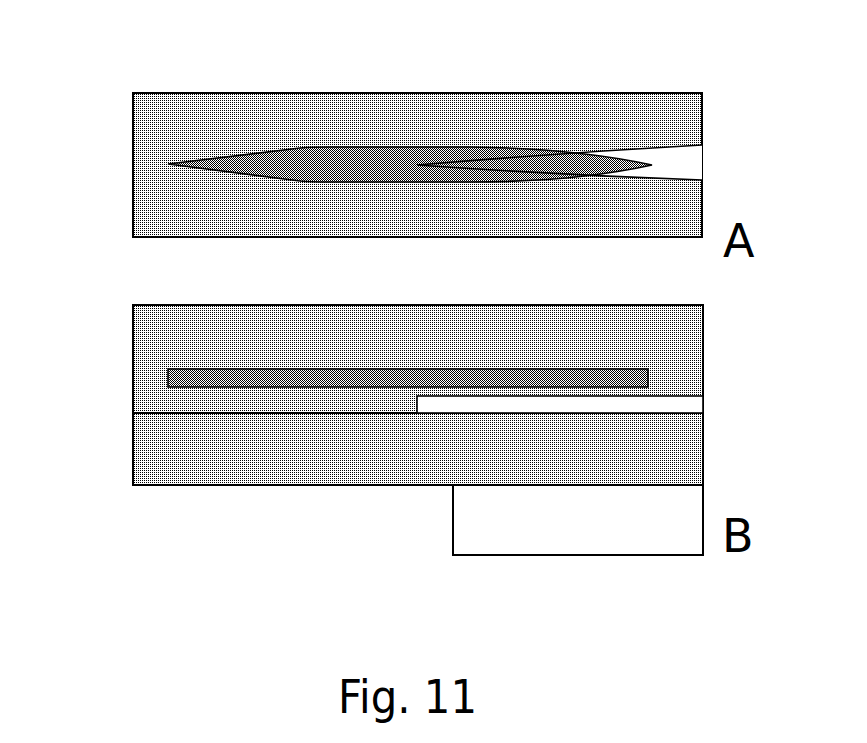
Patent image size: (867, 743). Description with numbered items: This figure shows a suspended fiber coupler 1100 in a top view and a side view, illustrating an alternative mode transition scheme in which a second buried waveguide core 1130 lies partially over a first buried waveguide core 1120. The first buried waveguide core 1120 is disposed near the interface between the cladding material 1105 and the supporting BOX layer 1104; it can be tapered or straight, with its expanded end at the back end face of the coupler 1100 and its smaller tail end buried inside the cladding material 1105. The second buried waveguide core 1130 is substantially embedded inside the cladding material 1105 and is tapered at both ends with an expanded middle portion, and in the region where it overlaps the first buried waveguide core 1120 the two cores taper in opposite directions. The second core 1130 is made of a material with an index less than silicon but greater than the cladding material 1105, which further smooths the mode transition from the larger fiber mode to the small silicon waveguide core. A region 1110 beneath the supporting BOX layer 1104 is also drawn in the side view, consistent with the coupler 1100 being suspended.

The suspended fiber coupler 1100 is at (149, 68).
The supporting BOX layer 1104 is at (672, 437).
The cladding material 1105 is at (665, 110).
The undercut / trench region 1110 is at (578, 520).
The first buried waveguide core 1120 is at (668, 161).
The second buried waveguide core 1130 is at (343, 147).